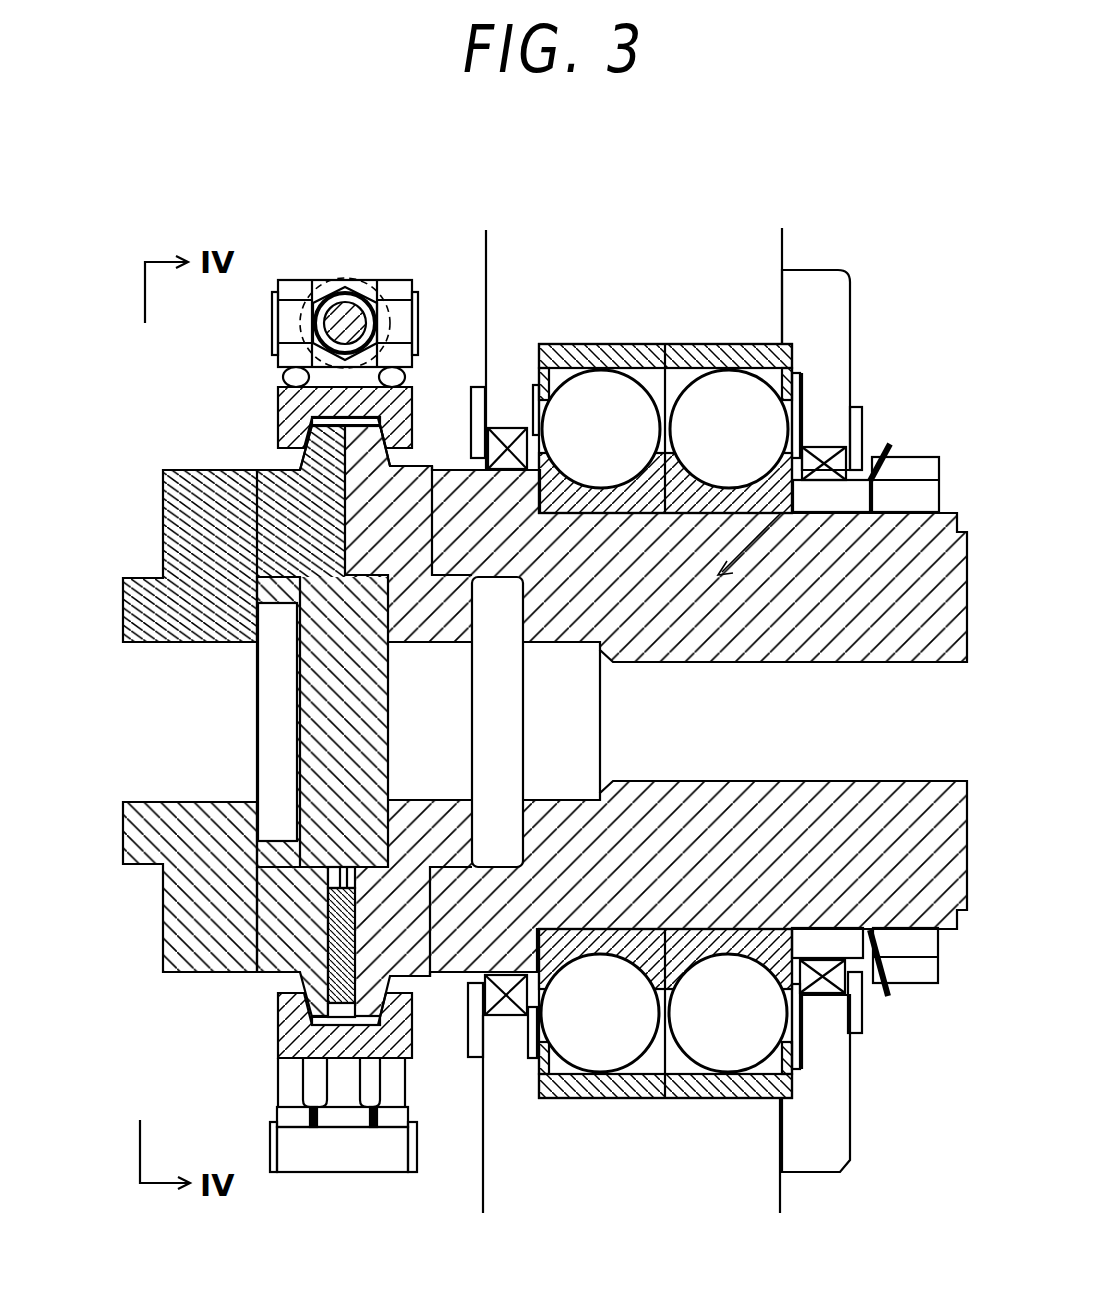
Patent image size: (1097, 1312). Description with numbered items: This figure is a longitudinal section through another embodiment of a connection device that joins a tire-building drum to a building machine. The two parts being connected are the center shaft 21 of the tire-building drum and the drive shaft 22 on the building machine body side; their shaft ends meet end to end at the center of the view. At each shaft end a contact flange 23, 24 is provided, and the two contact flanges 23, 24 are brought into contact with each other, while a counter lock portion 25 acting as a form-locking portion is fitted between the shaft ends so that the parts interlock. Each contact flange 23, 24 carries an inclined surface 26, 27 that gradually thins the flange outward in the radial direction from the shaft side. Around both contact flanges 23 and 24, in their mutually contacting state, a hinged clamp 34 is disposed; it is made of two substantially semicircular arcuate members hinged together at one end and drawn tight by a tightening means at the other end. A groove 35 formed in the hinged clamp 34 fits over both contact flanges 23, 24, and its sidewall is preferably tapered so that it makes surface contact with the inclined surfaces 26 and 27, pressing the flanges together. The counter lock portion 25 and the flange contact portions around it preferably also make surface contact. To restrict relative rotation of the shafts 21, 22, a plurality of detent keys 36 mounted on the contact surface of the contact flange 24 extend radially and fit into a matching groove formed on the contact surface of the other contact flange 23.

The center shaft 21 is at (140, 857).
The drive shaft 22 is at (796, 498).
The contact flange 23 is at (310, 970).
The contact flange 24 is at (374, 982).
The counter lock portion 25 is at (404, 746).
The inclined surface 26 is at (307, 443).
The inclined surface 27 is at (412, 427).
The hinged clamp 34 is at (383, 273).
The groove 35 is at (287, 1067).
The detent key 36 is at (347, 1035).